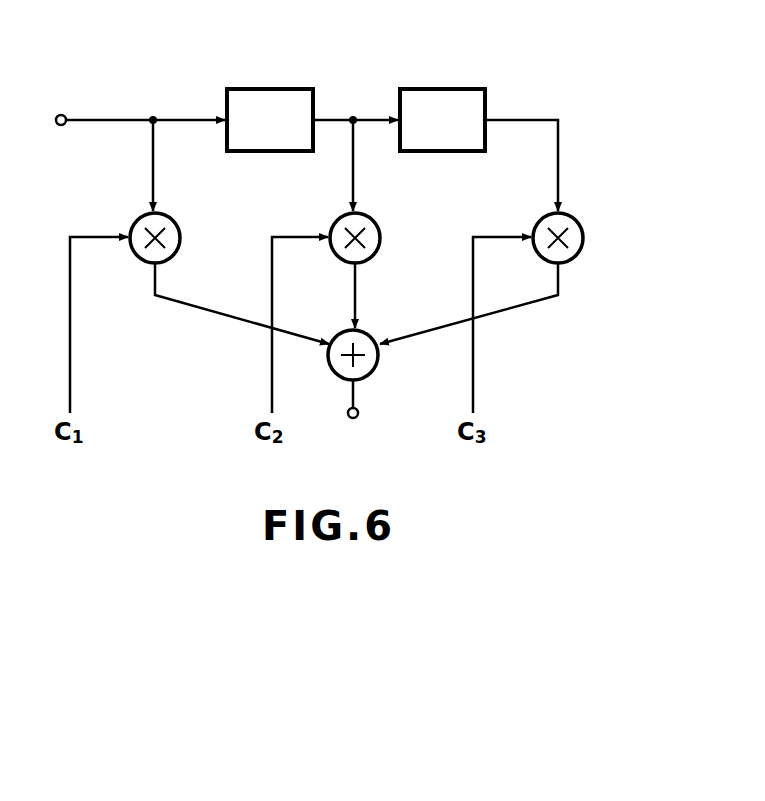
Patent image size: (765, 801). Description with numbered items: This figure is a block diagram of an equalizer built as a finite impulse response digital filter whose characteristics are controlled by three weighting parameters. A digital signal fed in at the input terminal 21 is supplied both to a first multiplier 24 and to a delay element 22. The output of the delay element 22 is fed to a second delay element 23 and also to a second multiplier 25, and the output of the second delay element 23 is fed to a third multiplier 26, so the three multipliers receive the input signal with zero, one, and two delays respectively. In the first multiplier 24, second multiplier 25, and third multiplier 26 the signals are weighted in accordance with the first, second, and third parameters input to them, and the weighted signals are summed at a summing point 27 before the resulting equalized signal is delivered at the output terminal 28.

The input terminal 21 is at (62, 114).
The delay element 22 is at (272, 88).
The second delay element 23 is at (440, 88).
The first multiplier 24 is at (174, 222).
The second multiplier 25 is at (376, 222).
The third multiplier 26 is at (578, 221).
The summing point 27 is at (374, 336).
The output terminal 28 is at (355, 419).